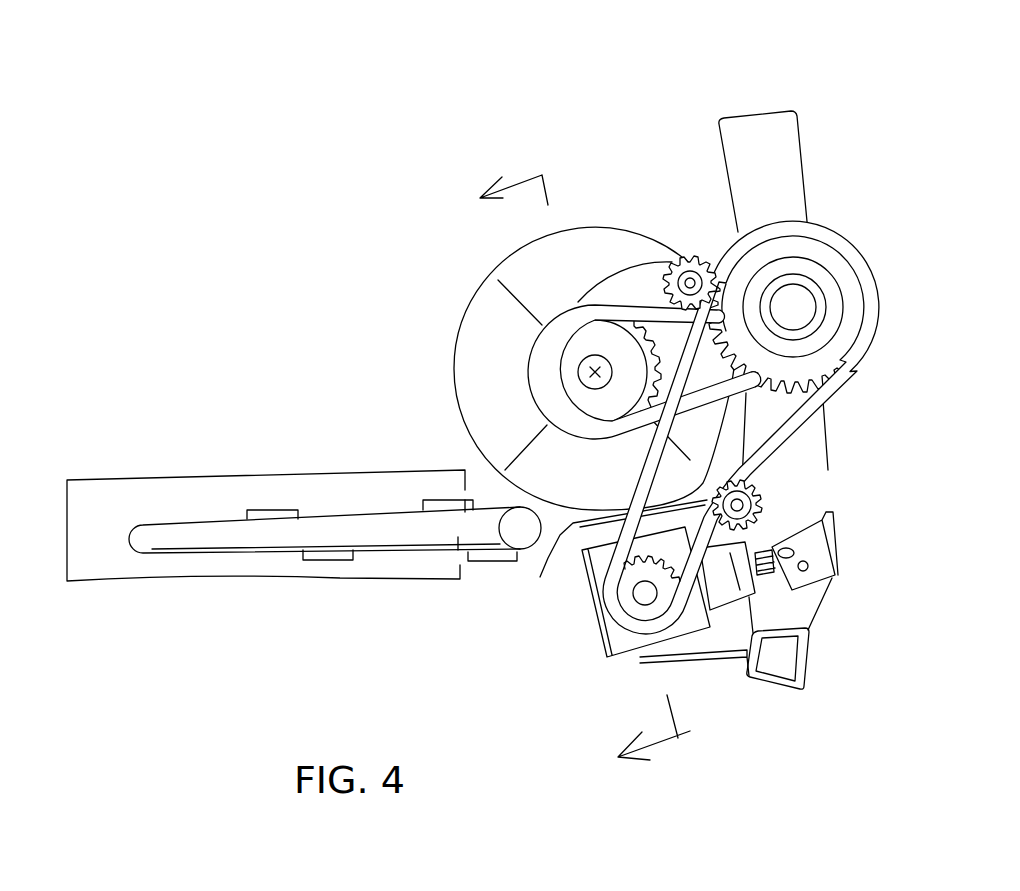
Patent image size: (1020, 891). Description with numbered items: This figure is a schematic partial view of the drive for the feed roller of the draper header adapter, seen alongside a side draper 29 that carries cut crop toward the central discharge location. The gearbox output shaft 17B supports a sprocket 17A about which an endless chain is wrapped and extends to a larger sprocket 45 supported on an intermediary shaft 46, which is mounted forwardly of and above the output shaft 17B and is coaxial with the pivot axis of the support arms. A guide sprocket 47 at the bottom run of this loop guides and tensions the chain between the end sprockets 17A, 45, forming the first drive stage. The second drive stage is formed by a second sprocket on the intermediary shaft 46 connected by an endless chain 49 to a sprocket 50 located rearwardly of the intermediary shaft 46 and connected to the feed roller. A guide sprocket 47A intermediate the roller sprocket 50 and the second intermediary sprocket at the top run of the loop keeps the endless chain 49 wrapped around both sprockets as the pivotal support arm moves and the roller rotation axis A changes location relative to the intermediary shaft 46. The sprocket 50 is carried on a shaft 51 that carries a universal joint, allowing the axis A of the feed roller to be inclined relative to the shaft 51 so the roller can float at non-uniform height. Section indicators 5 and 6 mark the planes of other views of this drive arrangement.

The support post / section line 5 is at (782, 100).
The section line 6 is at (586, 466).
The side draper 29 is at (305, 472).
The larger sprocket 45 is at (835, 348).
The intermediary shaft 46 is at (792, 310).
The guide sprocket 47 is at (758, 492).
The guide sprocket 47A is at (711, 255).
The endless chain 49 is at (632, 314).
The sprocket 50 is at (588, 324).
The shaft 51 is at (587, 363).
The axis A is at (580, 373).
The sprocket 17A is at (627, 606).
The output shaft 17B is at (643, 592).